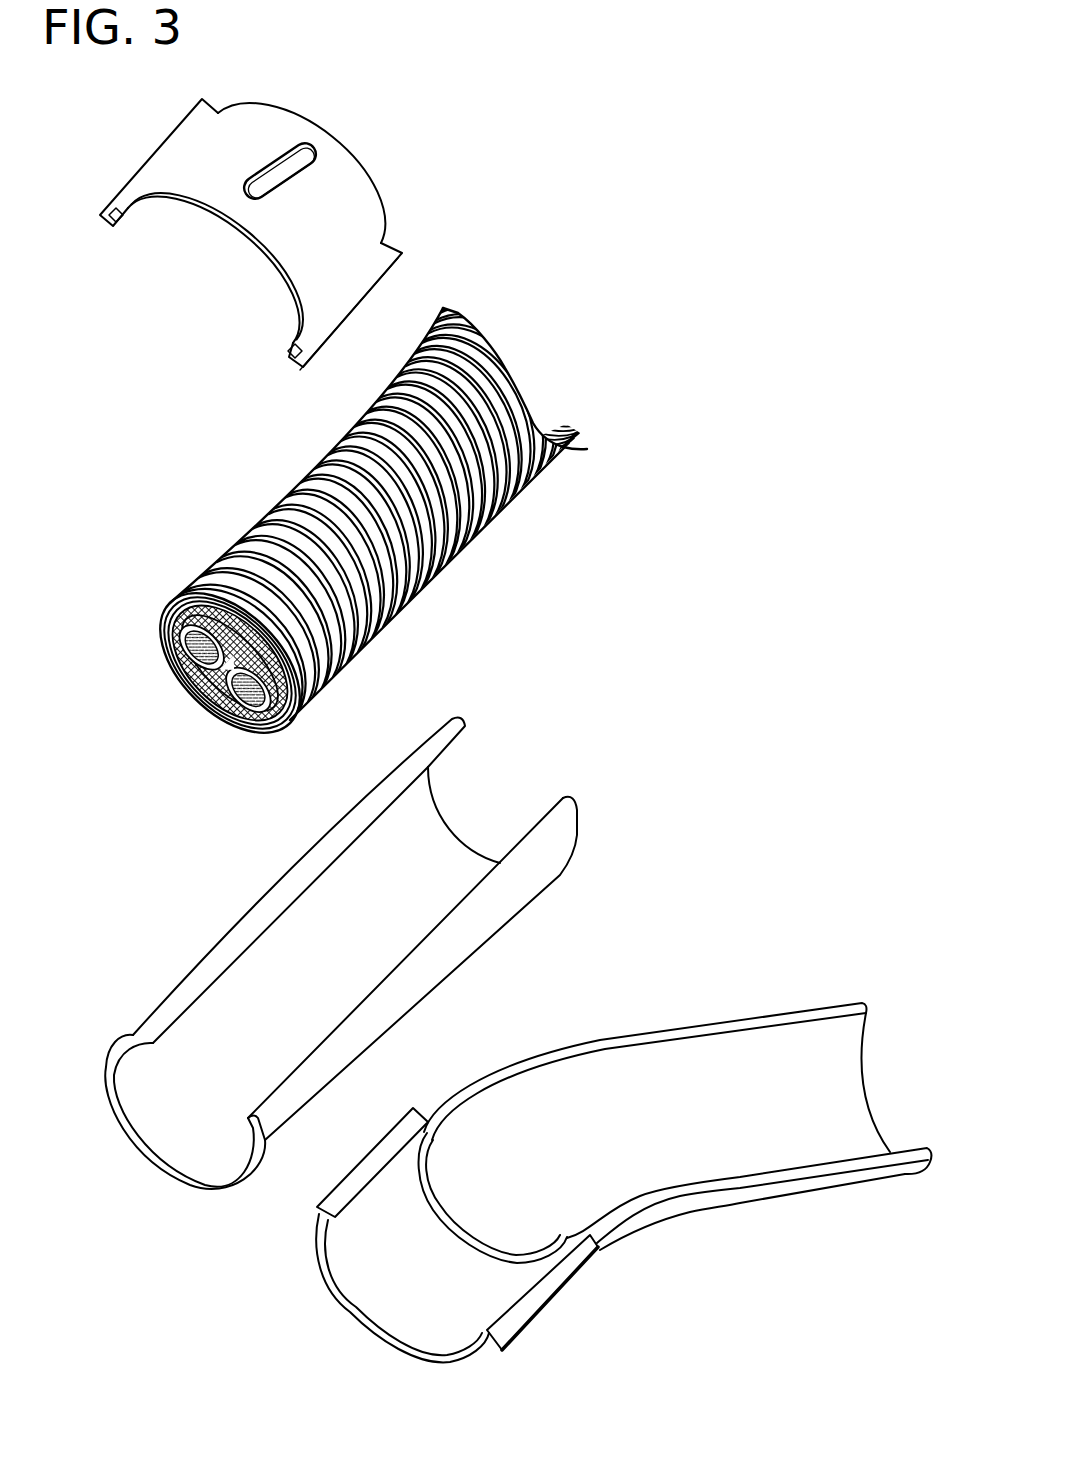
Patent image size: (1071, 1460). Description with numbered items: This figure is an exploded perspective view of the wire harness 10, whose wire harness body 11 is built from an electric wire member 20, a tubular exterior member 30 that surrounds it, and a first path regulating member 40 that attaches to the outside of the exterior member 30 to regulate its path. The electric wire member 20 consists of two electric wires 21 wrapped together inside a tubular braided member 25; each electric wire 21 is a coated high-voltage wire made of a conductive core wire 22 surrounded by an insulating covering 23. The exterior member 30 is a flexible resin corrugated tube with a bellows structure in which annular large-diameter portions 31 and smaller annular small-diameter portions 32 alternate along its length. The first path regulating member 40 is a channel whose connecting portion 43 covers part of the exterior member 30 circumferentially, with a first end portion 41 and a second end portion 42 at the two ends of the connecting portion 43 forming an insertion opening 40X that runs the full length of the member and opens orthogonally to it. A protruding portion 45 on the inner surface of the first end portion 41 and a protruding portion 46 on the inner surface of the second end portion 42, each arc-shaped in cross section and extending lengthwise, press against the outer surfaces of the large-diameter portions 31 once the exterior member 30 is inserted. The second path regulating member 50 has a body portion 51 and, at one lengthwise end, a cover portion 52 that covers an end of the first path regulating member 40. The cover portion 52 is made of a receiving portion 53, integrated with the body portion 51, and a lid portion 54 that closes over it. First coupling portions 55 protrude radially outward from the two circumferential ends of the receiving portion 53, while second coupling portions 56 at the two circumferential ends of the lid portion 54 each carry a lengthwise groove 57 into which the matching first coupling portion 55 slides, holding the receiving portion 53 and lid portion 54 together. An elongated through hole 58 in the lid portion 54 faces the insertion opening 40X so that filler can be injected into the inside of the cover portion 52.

The wire harness 10 is at (818, 170).
The wire harness body 11 is at (282, 489).
The electric wire member 20 is at (307, 790).
The electric wire 21 is at (238, 702).
The core wire 22 is at (182, 668).
The insulating covering 23 is at (212, 681).
The braided member 25 is at (254, 716).
The exterior member 30 is at (98, 539).
The large-diameter portion 31 is at (216, 596).
The small-diameter portion 32 is at (193, 598).
The first path regulating member 40 is at (473, 958).
The insertion opening 40X is at (358, 1003).
The first end portion 41 is at (188, 998).
The second end portion 42 is at (298, 1066).
The connecting portion 43 is at (394, 1020).
The protruding portion 45 is at (142, 1046).
The protruding portion 46 is at (250, 1125).
The second path regulating member 50 is at (832, 1191).
The body portion 51 is at (718, 1022).
The cover portion 52 is at (340, 741).
The receiving portion 53 is at (390, 1313).
The lid portion 54 is at (356, 188).
The first coupling portion 55 is at (333, 1197).
The second coupling portion 56 is at (105, 212).
The groove 57 is at (118, 232).
The through hole 58 is at (288, 177).